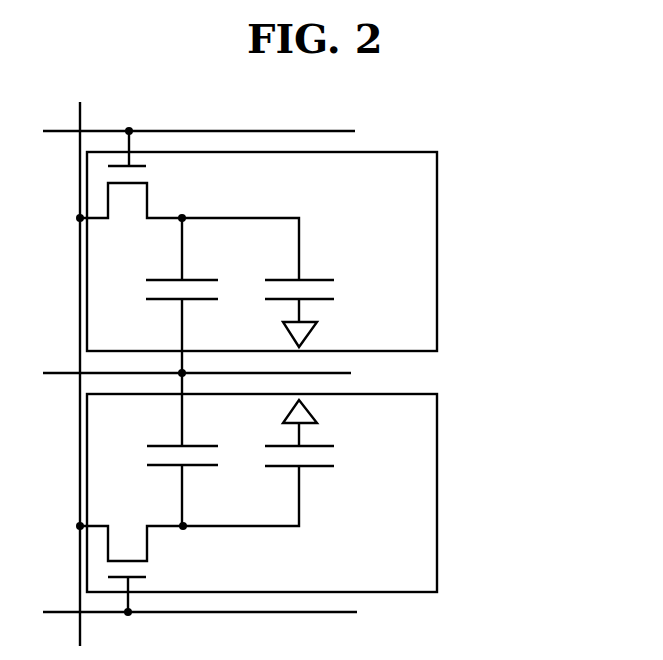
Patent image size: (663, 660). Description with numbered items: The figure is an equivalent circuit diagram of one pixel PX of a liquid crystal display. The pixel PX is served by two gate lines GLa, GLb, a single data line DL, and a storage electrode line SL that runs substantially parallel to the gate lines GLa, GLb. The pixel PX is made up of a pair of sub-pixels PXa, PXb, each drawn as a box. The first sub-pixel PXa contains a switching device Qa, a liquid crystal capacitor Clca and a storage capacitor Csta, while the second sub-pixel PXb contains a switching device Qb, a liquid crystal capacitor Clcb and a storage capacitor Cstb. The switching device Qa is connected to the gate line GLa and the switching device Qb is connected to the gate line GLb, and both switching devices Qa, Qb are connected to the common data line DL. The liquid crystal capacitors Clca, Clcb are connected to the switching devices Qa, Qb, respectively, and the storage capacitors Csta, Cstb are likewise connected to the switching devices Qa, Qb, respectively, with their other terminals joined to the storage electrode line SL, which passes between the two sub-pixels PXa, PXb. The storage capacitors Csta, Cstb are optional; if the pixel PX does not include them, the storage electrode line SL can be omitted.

The data line DL is at (82, 359).
The gate line GLa is at (223, 131).
The gate line GLb is at (224, 612).
The storage electrode line SL is at (179, 372).
The switching device Qa is at (131, 176).
The switching device Qb is at (131, 567).
The storage capacitor Csta is at (155, 295).
The storage capacitor Cstb is at (155, 449).
The liquid crystal capacitor Clca is at (285, 282).
The liquid crystal capacitor Clcb is at (286, 463).
The sub-pixel PXa is at (438, 323).
The sub-pixel PXb is at (438, 420).
The pixel PX is at (555, 328).